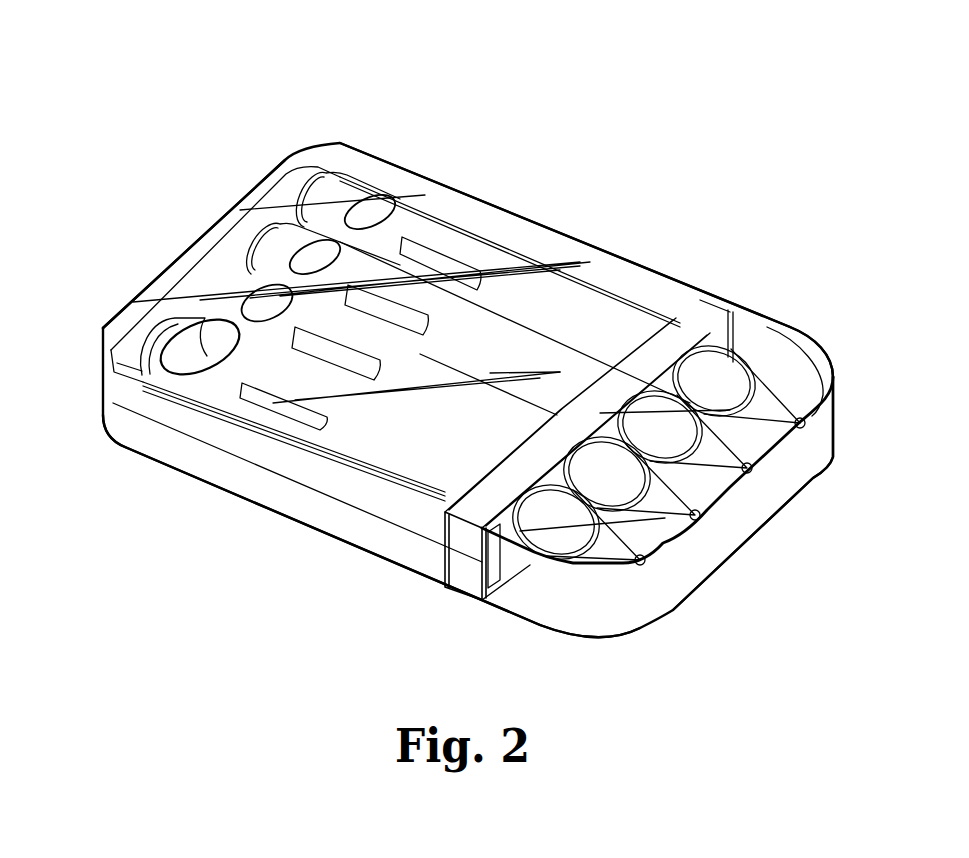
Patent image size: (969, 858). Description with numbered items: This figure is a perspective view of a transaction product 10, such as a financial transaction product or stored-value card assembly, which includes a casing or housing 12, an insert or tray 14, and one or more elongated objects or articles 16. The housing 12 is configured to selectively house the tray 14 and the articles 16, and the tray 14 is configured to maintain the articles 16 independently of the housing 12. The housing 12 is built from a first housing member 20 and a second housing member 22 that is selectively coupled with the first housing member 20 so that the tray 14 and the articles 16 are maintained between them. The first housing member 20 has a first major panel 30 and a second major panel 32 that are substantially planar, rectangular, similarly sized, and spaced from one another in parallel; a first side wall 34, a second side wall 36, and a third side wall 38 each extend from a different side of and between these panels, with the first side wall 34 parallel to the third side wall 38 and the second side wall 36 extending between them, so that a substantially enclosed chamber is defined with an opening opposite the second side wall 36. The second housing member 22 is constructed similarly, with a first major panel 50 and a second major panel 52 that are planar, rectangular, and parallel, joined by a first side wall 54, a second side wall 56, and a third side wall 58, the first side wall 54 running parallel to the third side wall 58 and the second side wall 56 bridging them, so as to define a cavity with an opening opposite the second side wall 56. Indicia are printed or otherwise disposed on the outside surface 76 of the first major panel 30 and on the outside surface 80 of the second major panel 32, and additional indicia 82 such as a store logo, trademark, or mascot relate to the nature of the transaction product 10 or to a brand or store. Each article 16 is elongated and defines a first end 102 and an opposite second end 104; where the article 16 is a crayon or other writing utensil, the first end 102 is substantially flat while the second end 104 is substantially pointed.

The transaction product 10 is at (268, 88).
The housing 12 is at (586, 606).
The tray 14 is at (146, 405).
The article 16 is at (781, 406).
The first housing member 20 is at (280, 503).
The second housing member 22 is at (630, 613).
The first major panel 30 is at (233, 253).
The second major panel 32 is at (137, 445).
The first side wall 34 is at (432, 568).
The second side wall 36 is at (155, 270).
The third side wall 38 is at (493, 202).
The first major panel 50 is at (800, 420).
The second major panel 52 is at (518, 618).
The first side wall 54 is at (460, 575).
The second side wall 56 is at (727, 538).
The third side wall 58 is at (787, 335).
The outside surface 76 is at (562, 253).
The outside surface 80 is at (333, 537).
The indicia 82 is at (143, 381).
The first end 102 is at (347, 193).
The second end 104 is at (723, 533).